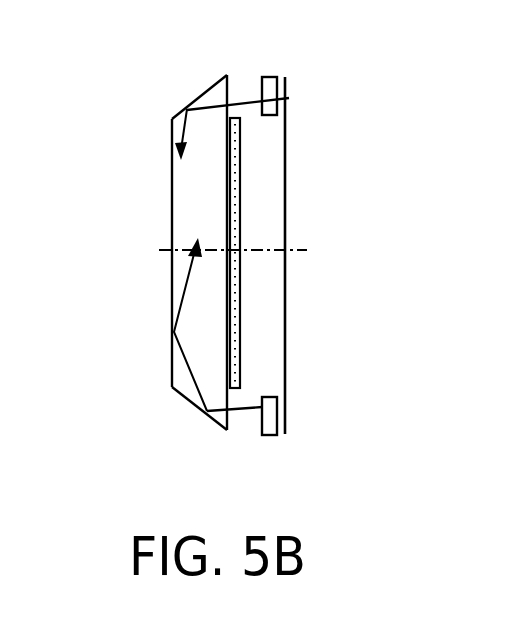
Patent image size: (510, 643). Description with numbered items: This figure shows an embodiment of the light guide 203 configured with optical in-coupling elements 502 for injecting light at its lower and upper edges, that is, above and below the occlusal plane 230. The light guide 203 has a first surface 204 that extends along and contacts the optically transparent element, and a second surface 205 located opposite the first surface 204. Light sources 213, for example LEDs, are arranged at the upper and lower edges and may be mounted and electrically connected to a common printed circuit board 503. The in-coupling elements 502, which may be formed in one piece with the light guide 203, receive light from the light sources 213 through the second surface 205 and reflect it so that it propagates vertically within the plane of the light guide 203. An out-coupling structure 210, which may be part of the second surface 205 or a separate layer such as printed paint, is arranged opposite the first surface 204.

The light guide 203 is at (178, 220).
The first surface 204 is at (173, 157).
The second surface 205 is at (233, 93).
The out-coupling structure 210 is at (241, 381).
The light source 213 is at (278, 96).
The occlusal plane 230 is at (256, 254).
The in-coupling element 502 is at (218, 93).
The printed circuit board 503 is at (286, 210).